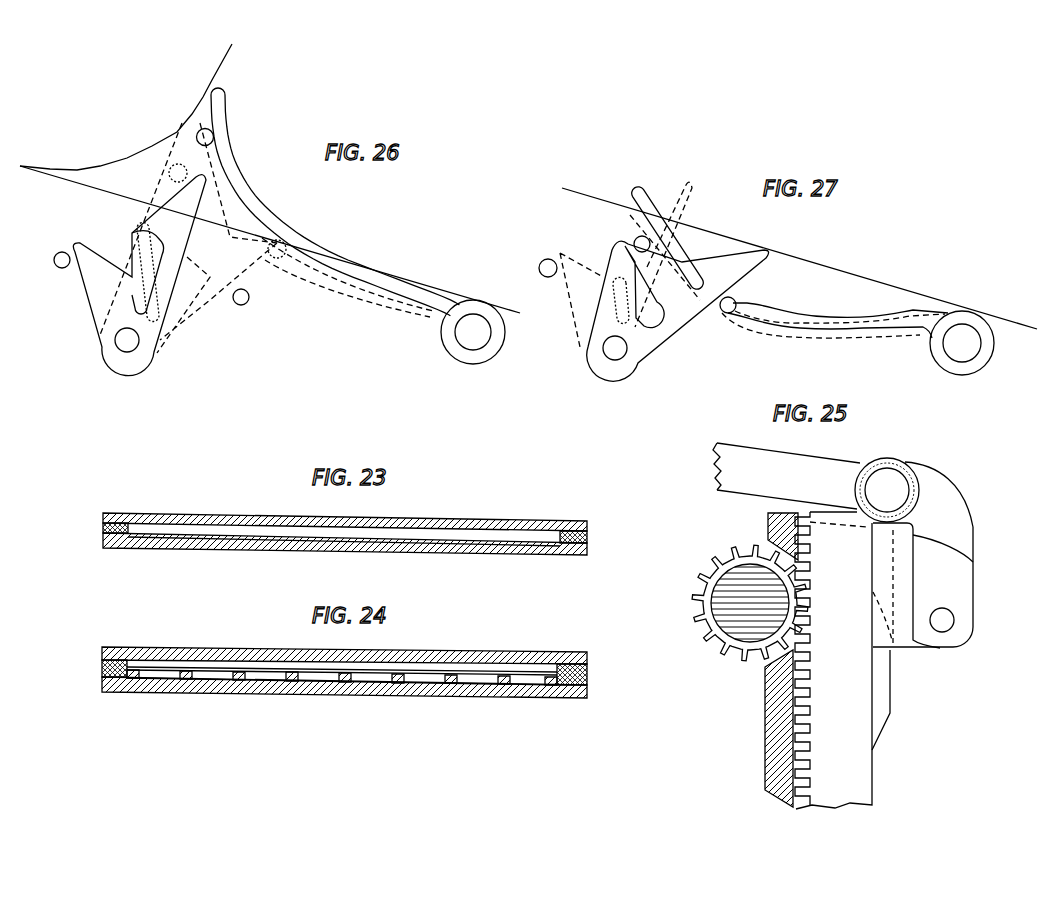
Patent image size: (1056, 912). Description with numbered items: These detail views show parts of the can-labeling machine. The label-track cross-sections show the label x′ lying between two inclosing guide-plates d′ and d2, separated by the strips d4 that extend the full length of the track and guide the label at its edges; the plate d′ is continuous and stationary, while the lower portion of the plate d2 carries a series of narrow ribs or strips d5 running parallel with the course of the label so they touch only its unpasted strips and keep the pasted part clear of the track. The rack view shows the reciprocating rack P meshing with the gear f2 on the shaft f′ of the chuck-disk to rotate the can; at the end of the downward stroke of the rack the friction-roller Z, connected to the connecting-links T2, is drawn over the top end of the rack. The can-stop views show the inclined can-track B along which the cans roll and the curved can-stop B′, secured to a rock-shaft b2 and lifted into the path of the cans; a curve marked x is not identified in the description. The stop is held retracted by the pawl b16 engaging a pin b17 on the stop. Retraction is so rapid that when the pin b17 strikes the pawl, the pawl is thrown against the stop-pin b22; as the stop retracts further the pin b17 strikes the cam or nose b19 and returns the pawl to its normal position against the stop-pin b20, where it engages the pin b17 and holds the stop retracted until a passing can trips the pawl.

In FIG. 26, the curved guide track x is at (127, 158).
In FIG. 26, the can-track B is at (100, 191).
In FIG. 27, the can-track B is at (812, 264).
In FIG. 26, the can-stop B′ is at (274, 222).
In FIG. 27, the can-stop B′ is at (790, 314).
In FIG. 26, the rock-shaft b2 is at (473, 332).
In FIG. 27, the rock-shaft b2 is at (962, 343).
In FIG. 26, the pawl b16 is at (158, 265).
In FIG. 27, the pawl b16 is at (677, 325).
In FIG. 26, the pin b17 is at (214, 137).
In FIG. 27, the pin b17 is at (636, 241).
In FIG. 26, the cam or nose b19 is at (82, 280).
In FIG. 27, the cam or nose b19 is at (620, 262).
In FIG. 26, the stop-pin b20 is at (54, 259).
In FIG. 27, the stop-pin b20 is at (545, 261).
In FIG. 26, the stop-pin b22 is at (249, 297).
In FIG. 27, the stop-pin b22 is at (735, 302).
In FIG. 23, the guide-plate d′ is at (257, 553).
In FIG. 24, the guide-plate d′ is at (238, 652).
In FIG. 23, the guide-plate d2 is at (245, 514).
In FIG. 24, the guide-plate d2 is at (237, 688).
In FIG. 23, the strips d4 is at (103, 531).
In FIG. 24, the strips d4 is at (102, 665).
In FIG. 24, the ribs or strips d5 is at (265, 678).
In FIG. 23, the label x′ is at (425, 537).
In FIG. 24, the label x′ is at (443, 672).
In FIG. 25, the connecting-links T2 is at (786, 476).
In FIG. 25, the friction-roller Z is at (895, 467).
In FIG. 25, the gear f2 is at (700, 574).
In FIG. 25, the chuck-disk shaft f′ is at (703, 610).
In FIG. 25, the rack P is at (869, 635).